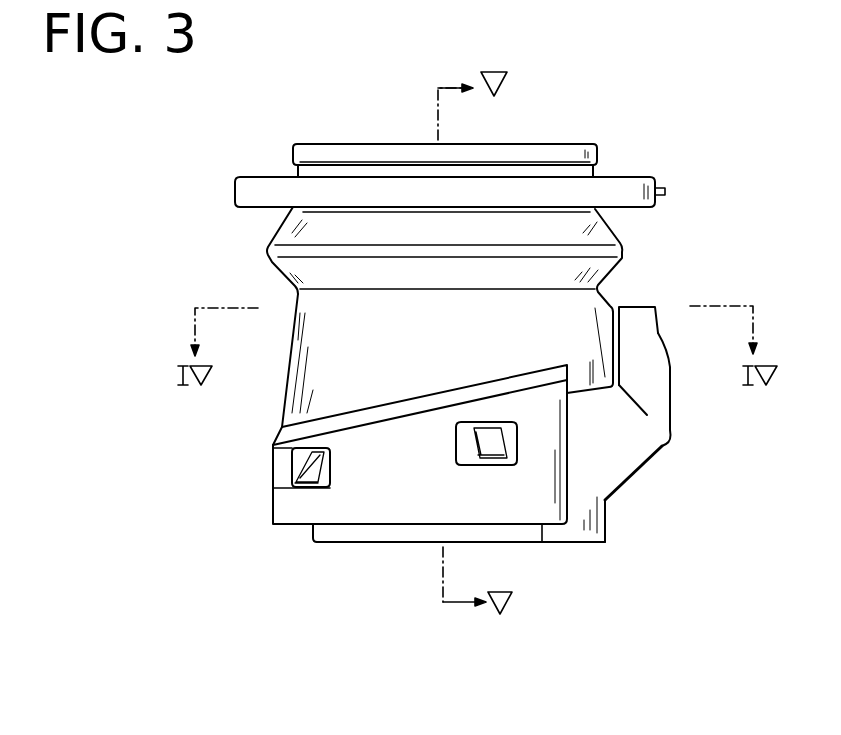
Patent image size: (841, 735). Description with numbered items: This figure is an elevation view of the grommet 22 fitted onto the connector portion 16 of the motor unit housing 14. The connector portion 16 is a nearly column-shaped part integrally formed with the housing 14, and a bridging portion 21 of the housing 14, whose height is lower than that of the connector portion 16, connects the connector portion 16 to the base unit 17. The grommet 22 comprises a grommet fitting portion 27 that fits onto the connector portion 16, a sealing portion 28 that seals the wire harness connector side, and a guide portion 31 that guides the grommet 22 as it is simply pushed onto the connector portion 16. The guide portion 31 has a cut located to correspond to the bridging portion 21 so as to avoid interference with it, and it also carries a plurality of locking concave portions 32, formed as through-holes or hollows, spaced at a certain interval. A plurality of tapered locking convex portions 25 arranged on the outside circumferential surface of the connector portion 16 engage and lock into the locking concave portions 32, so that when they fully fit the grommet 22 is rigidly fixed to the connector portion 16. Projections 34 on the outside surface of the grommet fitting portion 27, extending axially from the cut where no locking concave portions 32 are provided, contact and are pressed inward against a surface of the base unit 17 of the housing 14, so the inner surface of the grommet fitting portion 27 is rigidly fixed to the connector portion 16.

The housing 14 is at (611, 541).
The connector portion 16 is at (410, 543).
The base unit 17 is at (660, 370).
The bridging portion 21 is at (638, 448).
The grommet 22 is at (602, 140).
The locking convex portions 25 is at (310, 481).
The grommet fitting portion 27 is at (295, 350).
The sealing portion 28 is at (290, 228).
The guide portion 31 is at (280, 503).
The locking concave portions 32 is at (459, 453).
The projections 34 is at (621, 335).